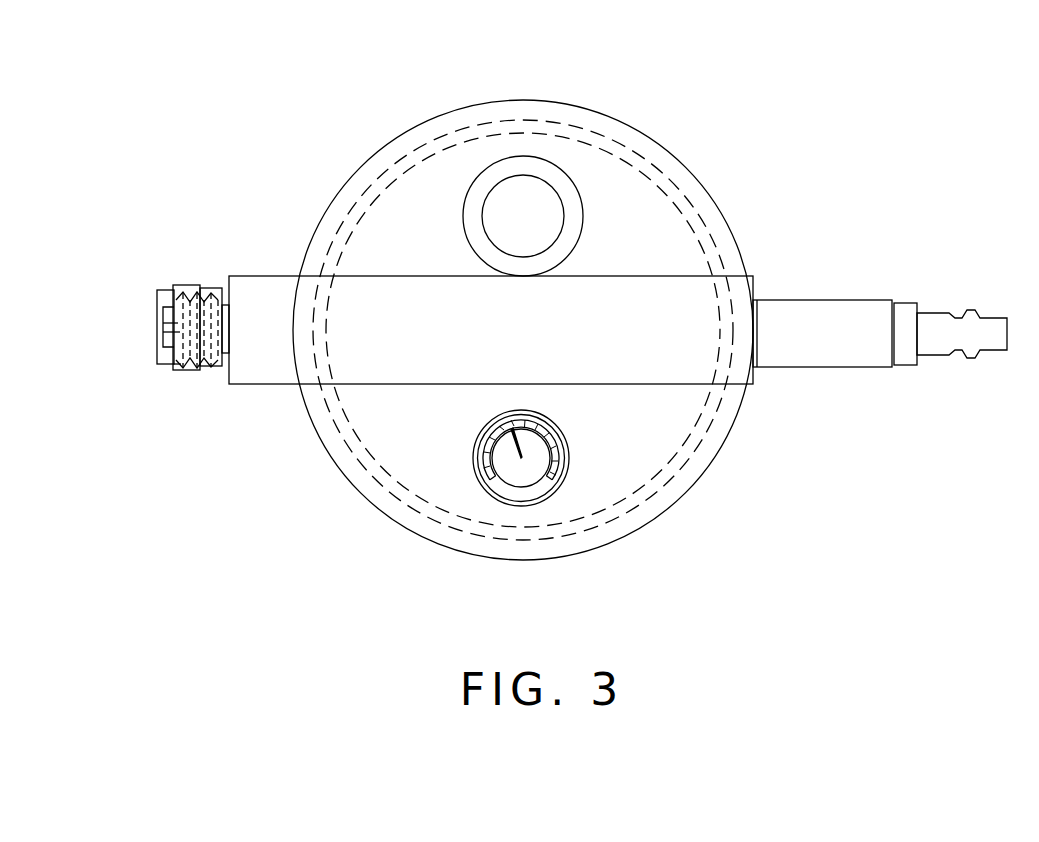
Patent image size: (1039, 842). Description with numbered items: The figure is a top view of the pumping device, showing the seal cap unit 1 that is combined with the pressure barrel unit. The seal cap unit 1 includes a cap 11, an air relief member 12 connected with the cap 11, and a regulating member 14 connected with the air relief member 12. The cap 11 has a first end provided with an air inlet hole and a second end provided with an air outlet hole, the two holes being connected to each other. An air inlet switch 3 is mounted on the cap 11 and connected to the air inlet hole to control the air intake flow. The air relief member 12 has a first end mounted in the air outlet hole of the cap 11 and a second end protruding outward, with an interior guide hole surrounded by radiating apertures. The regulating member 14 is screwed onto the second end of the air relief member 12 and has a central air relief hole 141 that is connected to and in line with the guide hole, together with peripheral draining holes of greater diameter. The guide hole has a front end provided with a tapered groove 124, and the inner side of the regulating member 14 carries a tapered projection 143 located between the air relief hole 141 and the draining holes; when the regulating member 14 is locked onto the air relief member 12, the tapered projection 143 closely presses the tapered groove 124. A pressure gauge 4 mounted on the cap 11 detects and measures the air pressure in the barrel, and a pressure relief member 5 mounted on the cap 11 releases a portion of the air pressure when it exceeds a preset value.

The seal cap unit 1 is at (850, 93).
The air inlet switch 3 is at (846, 324).
The pressure gauge 4 is at (532, 492).
The pressure relief member 5 is at (533, 196).
The cap 11 is at (689, 477).
The air relief member 12 is at (213, 315).
The regulating member 14 is at (172, 295).
The tapered groove 124 is at (173, 364).
The air relief hole 141 is at (177, 325).
The tapered projection 143 is at (180, 332).